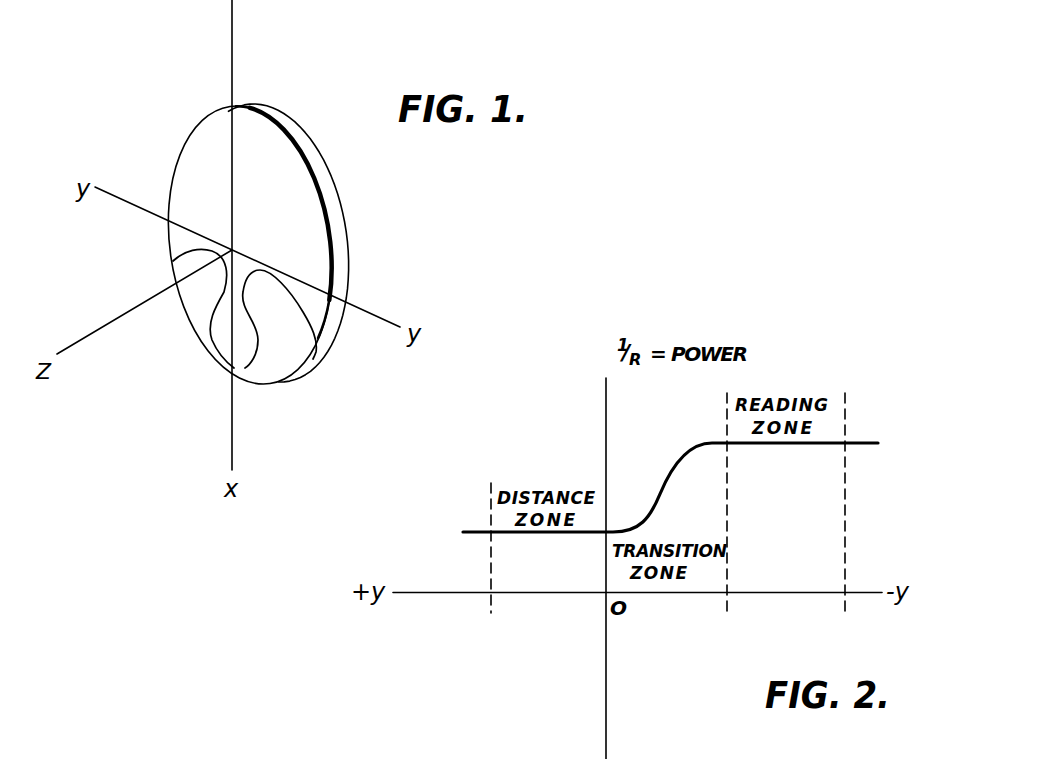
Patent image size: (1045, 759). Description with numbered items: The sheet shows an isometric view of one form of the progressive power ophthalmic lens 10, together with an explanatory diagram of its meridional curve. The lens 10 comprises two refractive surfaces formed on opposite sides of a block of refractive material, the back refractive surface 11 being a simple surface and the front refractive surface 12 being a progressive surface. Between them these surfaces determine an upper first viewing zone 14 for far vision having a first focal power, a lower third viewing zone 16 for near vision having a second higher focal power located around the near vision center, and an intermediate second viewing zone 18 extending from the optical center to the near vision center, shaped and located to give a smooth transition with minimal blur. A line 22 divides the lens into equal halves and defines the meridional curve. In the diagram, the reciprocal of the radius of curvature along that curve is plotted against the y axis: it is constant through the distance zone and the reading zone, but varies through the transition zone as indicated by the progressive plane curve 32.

In FIG. 1, the progressive power ophthalmic lens 10 is at (263, 246).
In FIG. 1, the back refractive surface 11 is at (346, 242).
In FIG. 1, the front refractive surface 12 is at (186, 157).
In FIG. 1, the first viewing zone 14 is at (278, 205).
In FIG. 1, the third viewing zone 16 is at (224, 345).
In FIG. 1, the second viewing zone 18 is at (203, 302).
In FIG. 1, the line 22 is at (232, 45).
In FIG. 2, the progressive plane curve 32 is at (673, 480).